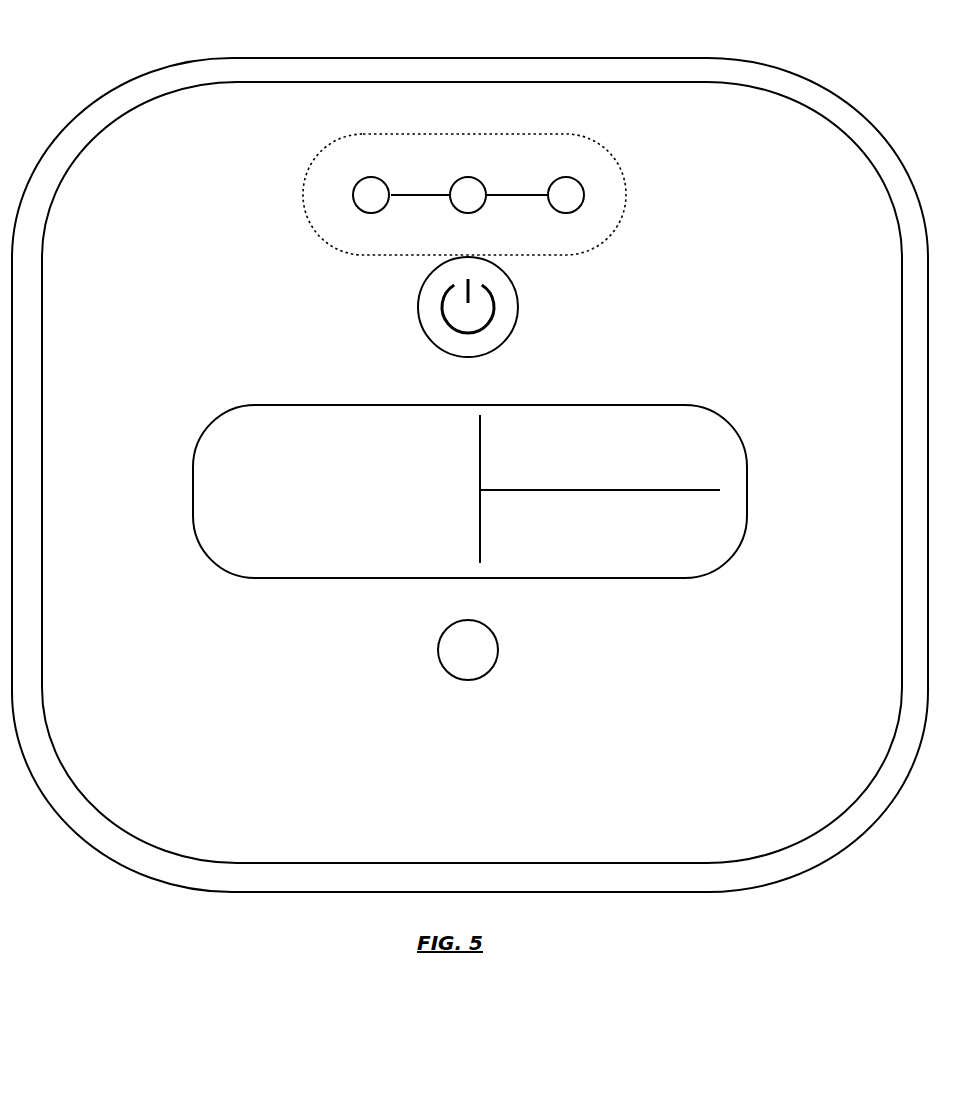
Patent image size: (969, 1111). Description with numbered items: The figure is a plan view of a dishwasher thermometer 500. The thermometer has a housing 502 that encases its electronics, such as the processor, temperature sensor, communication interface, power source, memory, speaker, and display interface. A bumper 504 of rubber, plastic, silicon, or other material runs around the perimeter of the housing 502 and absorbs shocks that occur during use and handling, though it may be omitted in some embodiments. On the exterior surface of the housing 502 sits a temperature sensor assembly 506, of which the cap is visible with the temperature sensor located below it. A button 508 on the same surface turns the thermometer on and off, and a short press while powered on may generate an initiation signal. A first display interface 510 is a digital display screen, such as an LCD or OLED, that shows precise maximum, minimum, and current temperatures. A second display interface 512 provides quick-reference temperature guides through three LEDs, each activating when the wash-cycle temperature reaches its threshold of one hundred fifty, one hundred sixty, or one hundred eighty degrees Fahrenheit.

The dishwasher thermometer 500 is at (832, 60).
The housing 502 is at (472, 472).
The bumper 504 is at (466, 876).
The temperature sensor assembly 506 is at (482, 641).
The button 508 is at (510, 312).
The first display interface 510 is at (737, 455).
The second display interface 512 is at (622, 187).